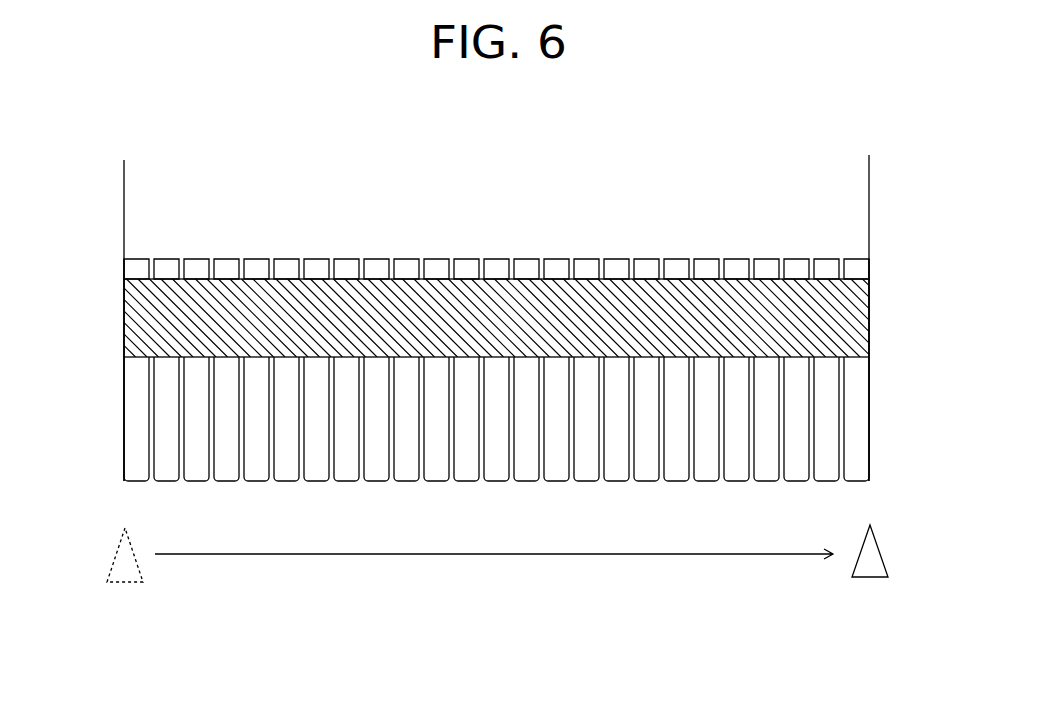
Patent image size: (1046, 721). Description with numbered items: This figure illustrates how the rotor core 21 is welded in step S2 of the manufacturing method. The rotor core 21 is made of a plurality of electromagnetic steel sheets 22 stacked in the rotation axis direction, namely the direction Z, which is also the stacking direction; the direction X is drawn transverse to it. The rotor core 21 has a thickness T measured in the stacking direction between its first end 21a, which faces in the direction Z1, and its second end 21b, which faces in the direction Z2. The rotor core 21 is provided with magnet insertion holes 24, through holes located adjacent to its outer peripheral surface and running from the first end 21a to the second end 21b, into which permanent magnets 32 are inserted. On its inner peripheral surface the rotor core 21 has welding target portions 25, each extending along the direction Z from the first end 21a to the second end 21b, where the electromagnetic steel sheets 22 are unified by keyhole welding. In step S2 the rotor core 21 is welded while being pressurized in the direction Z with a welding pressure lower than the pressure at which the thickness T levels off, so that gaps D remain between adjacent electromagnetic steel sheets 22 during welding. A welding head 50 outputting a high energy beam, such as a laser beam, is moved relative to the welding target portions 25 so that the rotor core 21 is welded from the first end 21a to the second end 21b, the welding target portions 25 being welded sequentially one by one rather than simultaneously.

The rotor core 21 is at (496, 334).
The first end 21a is at (123, 422).
The second end 21b is at (870, 422).
The electromagnetic steel sheets 22 is at (374, 244).
The magnet insertion holes 24 is at (848, 343).
The welding target portions 25 is at (855, 474).
The permanent magnets 32 is at (847, 297).
The welding head 50 is at (121, 583).
The gaps D is at (396, 249).
The thickness T is at (126, 169).
The step S2 is at (517, 124).
The direction X is at (368, 565).
The direction Z is at (524, 656).
The direction Z1 is at (412, 618).
The direction Z2 is at (524, 622).